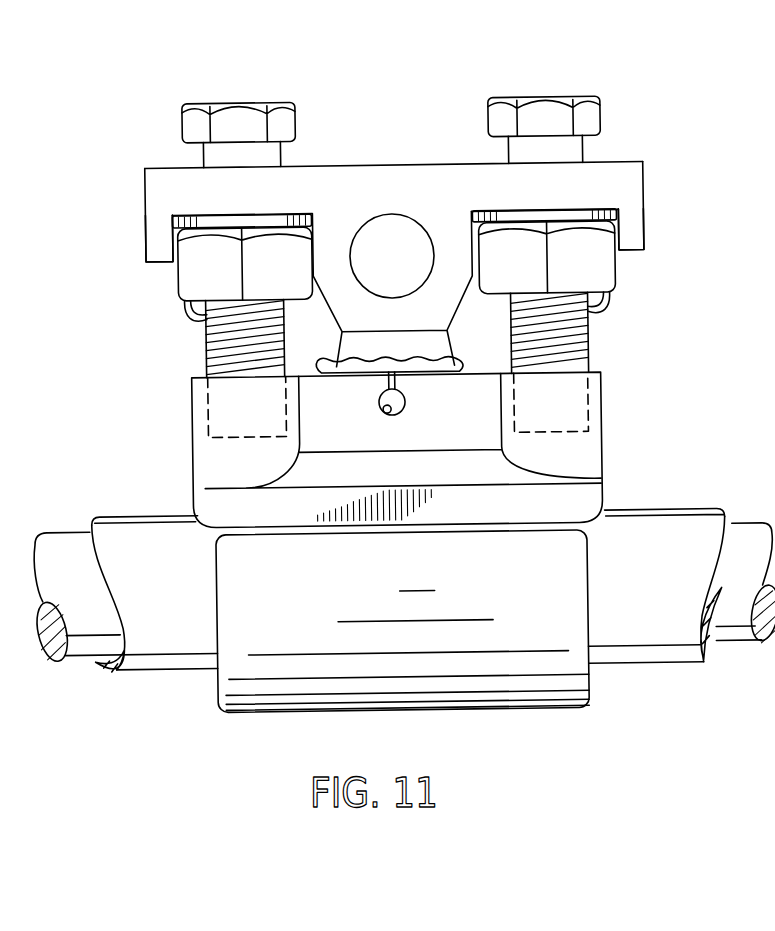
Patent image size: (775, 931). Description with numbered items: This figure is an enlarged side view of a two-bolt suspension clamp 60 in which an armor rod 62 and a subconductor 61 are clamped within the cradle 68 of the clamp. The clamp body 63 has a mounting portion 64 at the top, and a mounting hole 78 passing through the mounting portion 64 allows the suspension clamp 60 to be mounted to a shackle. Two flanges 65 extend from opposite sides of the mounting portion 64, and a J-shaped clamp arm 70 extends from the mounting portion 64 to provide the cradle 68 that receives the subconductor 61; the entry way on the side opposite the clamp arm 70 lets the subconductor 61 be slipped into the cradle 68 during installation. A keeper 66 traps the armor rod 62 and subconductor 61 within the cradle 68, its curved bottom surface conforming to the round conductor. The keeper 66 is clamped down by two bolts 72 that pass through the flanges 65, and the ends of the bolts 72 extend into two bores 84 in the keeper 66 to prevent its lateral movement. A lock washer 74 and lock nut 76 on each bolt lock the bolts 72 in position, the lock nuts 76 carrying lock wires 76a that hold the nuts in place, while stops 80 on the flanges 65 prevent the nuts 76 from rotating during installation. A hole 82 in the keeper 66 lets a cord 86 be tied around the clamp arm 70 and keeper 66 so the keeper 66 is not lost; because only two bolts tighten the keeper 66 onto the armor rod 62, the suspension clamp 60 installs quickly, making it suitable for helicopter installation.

The suspension clamp 60 is at (452, 88).
The subconductor 61 is at (72, 658).
The armor rod 62 is at (143, 535).
The clamp body 63 is at (533, 685).
The mounting portion 64 is at (357, 166).
The flanges 65 is at (178, 182).
The keeper 66 is at (596, 410).
The cradle 68 is at (300, 713).
The clamp arm 70 is at (472, 340).
The bolts 72 is at (240, 118).
The lock washer 74 is at (215, 217).
The lock nut 76 is at (190, 281).
The lock wires 76a is at (192, 312).
The mounting hole 78 is at (396, 226).
The stops 80 is at (155, 235).
The hole 82 is at (383, 417).
The bores 84 is at (207, 413).
The cord 86 is at (312, 362).